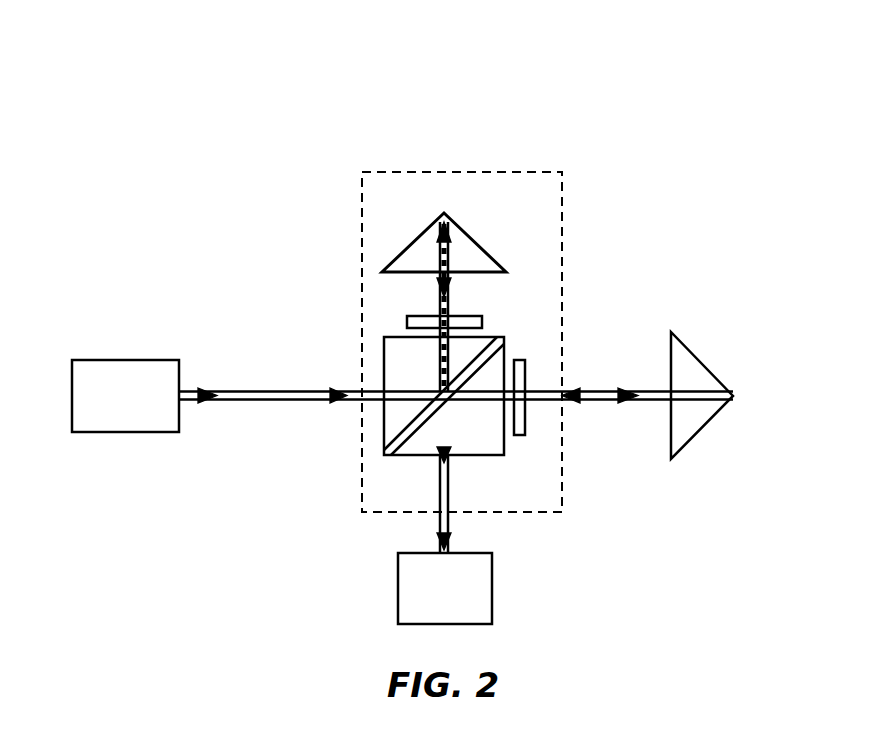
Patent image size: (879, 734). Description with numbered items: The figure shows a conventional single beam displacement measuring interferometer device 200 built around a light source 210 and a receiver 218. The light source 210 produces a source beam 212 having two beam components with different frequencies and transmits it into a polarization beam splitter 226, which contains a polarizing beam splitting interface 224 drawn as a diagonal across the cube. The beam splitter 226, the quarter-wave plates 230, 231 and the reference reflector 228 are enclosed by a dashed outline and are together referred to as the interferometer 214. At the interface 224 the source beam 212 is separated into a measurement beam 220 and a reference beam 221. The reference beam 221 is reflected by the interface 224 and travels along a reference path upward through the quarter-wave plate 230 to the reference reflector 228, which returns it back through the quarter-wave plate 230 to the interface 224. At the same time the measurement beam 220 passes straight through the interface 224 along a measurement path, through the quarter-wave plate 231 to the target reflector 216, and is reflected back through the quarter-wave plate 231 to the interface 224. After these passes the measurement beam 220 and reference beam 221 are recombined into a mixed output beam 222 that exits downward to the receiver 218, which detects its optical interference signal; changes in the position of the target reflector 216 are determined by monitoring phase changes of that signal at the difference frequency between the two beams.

The single beam interferometer device 200 is at (418, 100).
The light source 210 is at (133, 432).
The source beam 212 is at (246, 390).
The interferometer 214 is at (548, 172).
The target reflector 216 is at (707, 360).
The receiver 218 is at (492, 602).
The measurement beam 220 is at (600, 400).
The reference beam 221 is at (440, 298).
The mixed output beam 222 is at (448, 480).
The polarizing beam splitting interface 224 is at (497, 355).
The polarization beam splitter 226 is at (385, 352).
The reference reflector 228 is at (477, 245).
The quarter-wave plate 230 is at (482, 316).
The quarter-wave plate 231 is at (525, 435).